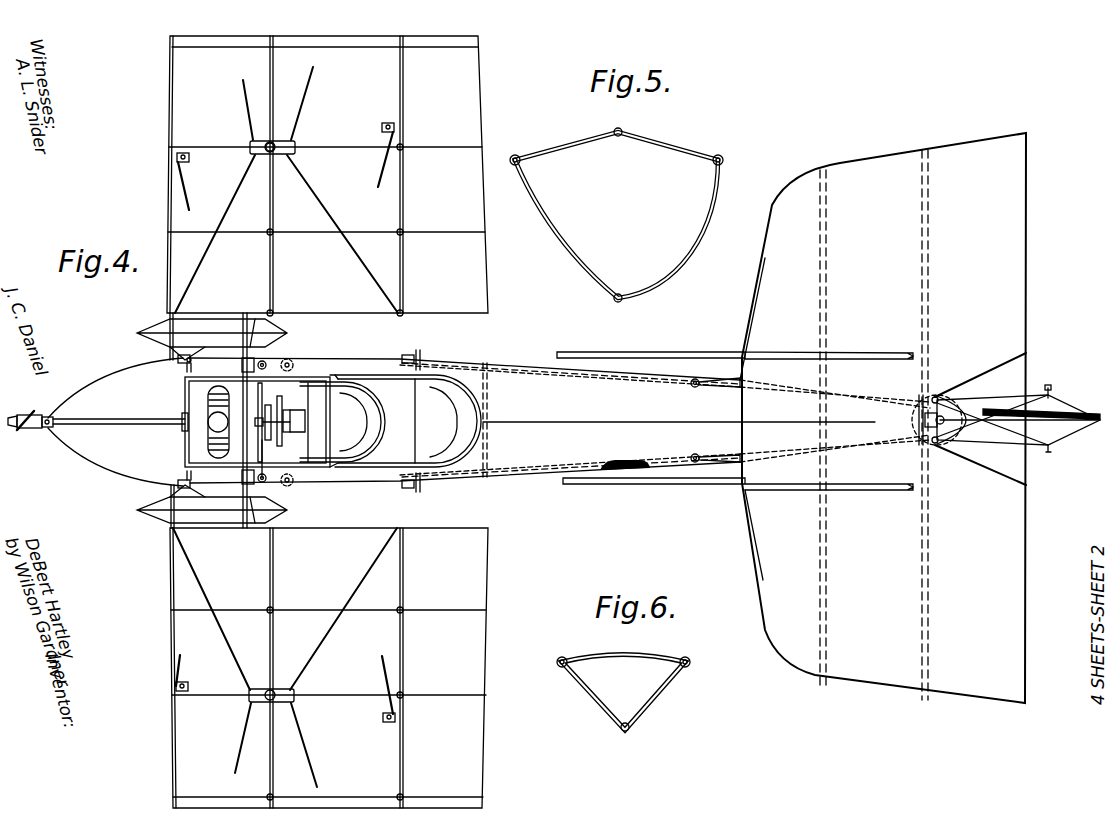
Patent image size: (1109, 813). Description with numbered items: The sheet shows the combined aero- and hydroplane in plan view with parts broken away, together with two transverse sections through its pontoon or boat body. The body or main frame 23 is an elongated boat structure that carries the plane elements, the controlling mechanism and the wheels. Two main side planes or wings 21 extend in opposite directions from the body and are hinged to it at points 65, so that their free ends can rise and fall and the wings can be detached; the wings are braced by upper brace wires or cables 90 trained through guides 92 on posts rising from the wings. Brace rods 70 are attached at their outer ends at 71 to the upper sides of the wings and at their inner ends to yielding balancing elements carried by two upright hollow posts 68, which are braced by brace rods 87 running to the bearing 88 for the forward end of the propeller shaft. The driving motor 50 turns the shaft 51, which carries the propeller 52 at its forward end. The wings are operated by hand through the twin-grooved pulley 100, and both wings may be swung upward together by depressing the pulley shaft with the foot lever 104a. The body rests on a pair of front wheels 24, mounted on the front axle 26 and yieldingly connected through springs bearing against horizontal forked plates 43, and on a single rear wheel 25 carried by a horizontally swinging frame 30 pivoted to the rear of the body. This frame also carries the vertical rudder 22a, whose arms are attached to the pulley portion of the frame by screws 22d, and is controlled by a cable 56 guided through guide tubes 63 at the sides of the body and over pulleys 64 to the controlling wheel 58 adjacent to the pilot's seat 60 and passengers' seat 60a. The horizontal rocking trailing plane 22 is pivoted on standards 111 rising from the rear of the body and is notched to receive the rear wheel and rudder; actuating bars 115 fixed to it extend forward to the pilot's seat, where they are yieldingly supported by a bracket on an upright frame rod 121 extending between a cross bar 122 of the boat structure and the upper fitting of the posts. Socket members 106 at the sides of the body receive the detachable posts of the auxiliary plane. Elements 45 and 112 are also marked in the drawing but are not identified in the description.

In FIG. 4, the side planes or wings 21 is at (176, 104).
In FIG. 4, the trailing plane 22 is at (883, 418).
In FIG. 4, the vertical plane or rudder 22a is at (1048, 400).
In FIG. 4, the screws 22d is at (938, 395).
In FIG. 4, the body or main frame 23 is at (533, 483).
In FIG. 5, the body or main frame 23 is at (690, 230).
In FIG. 4, the front wheels 24 is at (150, 325).
In FIG. 4, the rear wheel 25 is at (1060, 412).
In FIG. 6, the axle 26 is at (645, 718).
In FIG. 4, the horizontally swinging frame 30 is at (988, 398).
In FIG. 4, the horizontal forked plates 43 is at (244, 360).
In FIG. 4, the engine bed frame 45 is at (240, 392).
In FIG. 4, the driving motor 50 is at (207, 396).
In FIG. 4, the shaft 51 is at (130, 420).
In FIG. 4, the propeller 52 is at (30, 416).
In FIG. 4, the cable 56 is at (603, 372).
In FIG. 5, the cable 56 is at (523, 160).
In FIG. 6, the cable 56 is at (558, 665).
In FIG. 4, the controlling wheel 58 is at (288, 405).
In FIG. 4, the pilot's seat 60 is at (342, 422).
In FIG. 4, the passengers' seat 60a is at (405, 421).
In FIG. 4, the guide tubes 63 is at (632, 463).
In FIG. 4, the pulleys 64 is at (290, 360).
In FIG. 4, the hinges 65 is at (178, 362).
In FIG. 4, the upright posts 68 is at (300, 318).
In FIG. 4, the brace rods 70 is at (190, 190).
In FIG. 4, the attachment points 71 is at (190, 158).
In FIG. 4, the brace rods 87 is at (42, 437).
In FIG. 4, the bearing 88 is at (52, 432).
In FIG. 4, the upper brace wires 90 is at (244, 84).
In FIG. 4, the guides 92 is at (256, 144).
In FIG. 4, the twin-grooved pulley 100 is at (265, 440).
In FIG. 4, the foot lever 104a is at (292, 428).
In FIG. 4, the socket members 106 is at (430, 360).
In FIG. 4, the standards 111 is at (730, 375).
In FIG. 4, the fin trailing edge 112 is at (1005, 472).
In FIG. 4, the actuating bars 115 is at (655, 345).
In FIG. 4, the upright frame rod 121 is at (245, 480).
In FIG. 4, the cross bar 122 is at (262, 410).